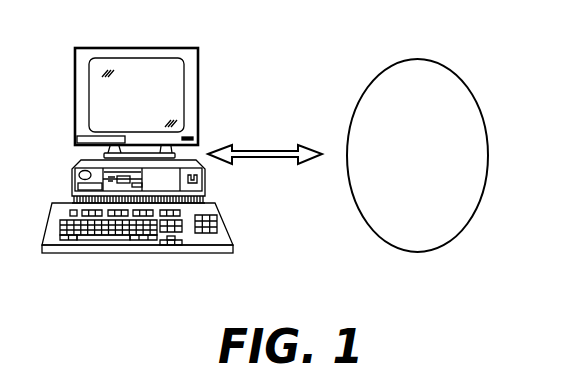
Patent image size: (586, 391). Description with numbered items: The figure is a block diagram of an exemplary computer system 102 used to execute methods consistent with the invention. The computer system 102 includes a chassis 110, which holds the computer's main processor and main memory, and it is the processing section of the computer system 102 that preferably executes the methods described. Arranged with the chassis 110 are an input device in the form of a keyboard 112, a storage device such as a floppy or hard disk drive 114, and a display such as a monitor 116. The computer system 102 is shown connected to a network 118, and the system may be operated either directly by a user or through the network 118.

The computer system 102 is at (157, 157).
The chassis 110 is at (203, 162).
The keyboard 112 is at (113, 253).
The floppy or hard disk drive 114 is at (104, 175).
The monitor 116 is at (198, 65).
The network 118 is at (482, 113).